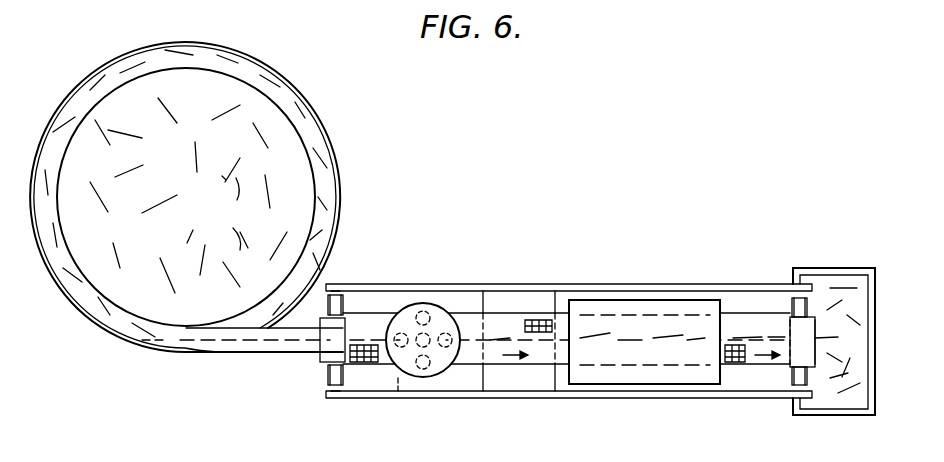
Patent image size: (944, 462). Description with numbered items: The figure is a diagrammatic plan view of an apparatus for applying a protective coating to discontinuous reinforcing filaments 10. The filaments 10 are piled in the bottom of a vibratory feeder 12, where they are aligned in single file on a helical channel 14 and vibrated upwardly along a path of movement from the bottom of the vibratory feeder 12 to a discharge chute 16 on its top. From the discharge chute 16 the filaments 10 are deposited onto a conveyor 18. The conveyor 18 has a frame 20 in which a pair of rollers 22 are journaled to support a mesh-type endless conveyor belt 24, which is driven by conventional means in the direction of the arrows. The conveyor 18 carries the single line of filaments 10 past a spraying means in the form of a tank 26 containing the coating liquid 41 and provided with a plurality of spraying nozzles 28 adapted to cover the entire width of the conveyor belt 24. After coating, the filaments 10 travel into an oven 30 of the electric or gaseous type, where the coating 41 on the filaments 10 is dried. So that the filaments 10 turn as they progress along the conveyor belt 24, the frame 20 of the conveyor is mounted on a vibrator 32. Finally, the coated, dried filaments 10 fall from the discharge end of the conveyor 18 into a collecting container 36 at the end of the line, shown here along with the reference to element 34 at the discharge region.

The discontinuous reinforcing filaments 10 is at (192, 232).
The vibratory feeder 12 is at (313, 127).
The helical channel 14 is at (330, 220).
The discharge chute 16 is at (276, 345).
The conveyor 18 is at (498, 380).
The frame 20 is at (447, 284).
The rollers 22 is at (351, 291).
The mesh-type endless conveyor belt 24 is at (517, 313).
The tank 26 is at (407, 303).
The spraying nozzles 28 is at (424, 367).
The oven 30 is at (602, 298).
The vibrator 32 is at (538, 380).
The discharge outlet 34 is at (815, 357).
The collecting container 36 is at (827, 268).
The coating liquid 41 is at (658, 293).